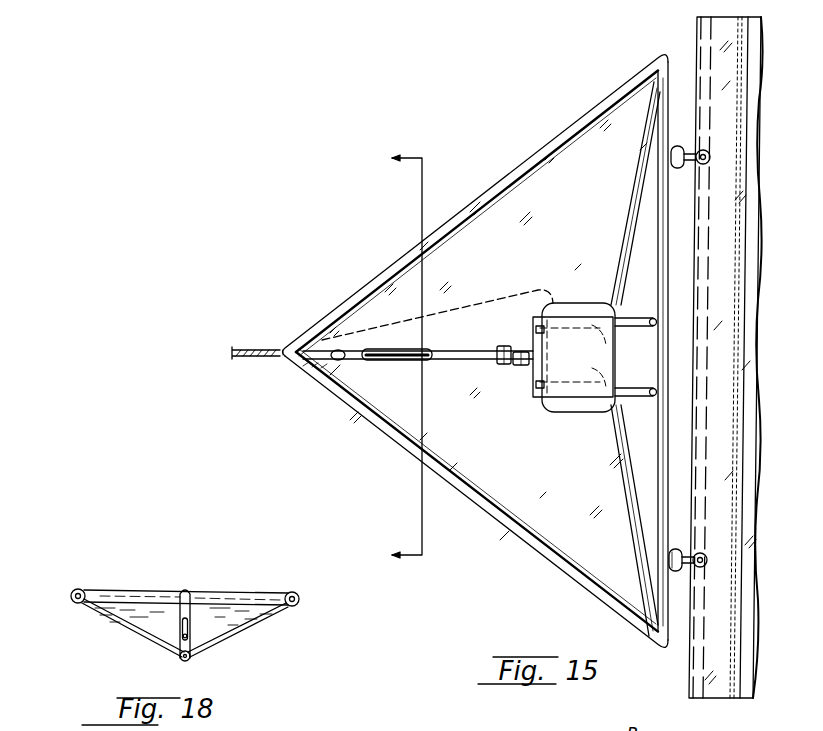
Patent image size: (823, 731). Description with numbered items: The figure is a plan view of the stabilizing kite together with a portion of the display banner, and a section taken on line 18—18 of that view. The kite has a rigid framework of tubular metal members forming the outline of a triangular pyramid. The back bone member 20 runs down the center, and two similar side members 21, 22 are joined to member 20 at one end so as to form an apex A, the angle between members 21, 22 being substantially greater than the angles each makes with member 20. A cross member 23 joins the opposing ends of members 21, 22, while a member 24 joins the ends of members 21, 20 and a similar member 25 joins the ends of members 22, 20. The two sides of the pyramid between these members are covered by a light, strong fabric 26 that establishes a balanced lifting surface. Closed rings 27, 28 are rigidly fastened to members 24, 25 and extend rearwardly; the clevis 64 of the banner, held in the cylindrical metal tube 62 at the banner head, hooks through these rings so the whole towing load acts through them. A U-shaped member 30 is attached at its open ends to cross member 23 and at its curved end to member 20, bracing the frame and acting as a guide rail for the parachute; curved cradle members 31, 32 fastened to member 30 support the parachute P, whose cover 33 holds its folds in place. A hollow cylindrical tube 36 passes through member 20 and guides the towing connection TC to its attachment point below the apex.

In FIG. 15, the section line 18 is at (407, 359).
In FIG. 15, the back bone member 20 is at (454, 349).
In FIG. 18, the back bone member 20 is at (194, 650).
In FIG. 15, the side member 21 is at (502, 522).
In FIG. 18, the side member 21 is at (71, 593).
In FIG. 15, the side member 22 is at (519, 170).
In FIG. 18, the side member 22 is at (297, 601).
In FIG. 15, the cross member 23 is at (669, 285).
In FIG. 15, the member 24 is at (627, 484).
In FIG. 15, the member 25 is at (633, 214).
In FIG. 15, the fabric 26 is at (484, 330).
In FIG. 18, the fabric 26 is at (133, 638).
In FIG. 15, the closed ring 27 is at (681, 549).
In FIG. 15, the closed ring 28 is at (678, 148).
In FIG. 15, the U-shaped member 30 is at (636, 387).
In FIG. 15, the cradle member 31 is at (573, 388).
In FIG. 15, the cradle member 32 is at (569, 324).
In FIG. 15, the cover 33 is at (542, 400).
In FIG. 15, the hollow cylindrical tube 36 is at (388, 350).
In FIG. 18, the hollow cylindrical tube 36 is at (182, 626).
In FIG. 15, the cylindrical metal tube 62 is at (700, 681).
In FIG. 15, the clevis 64 is at (681, 570).
In FIG. 15, the apex A is at (286, 362).
In FIG. 15, the towing connection TC is at (248, 348).
In FIG. 15, the parachute P is at (590, 409).